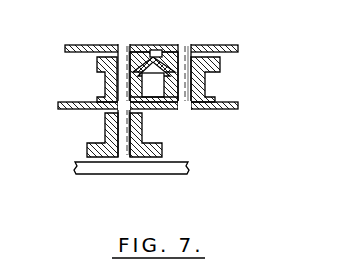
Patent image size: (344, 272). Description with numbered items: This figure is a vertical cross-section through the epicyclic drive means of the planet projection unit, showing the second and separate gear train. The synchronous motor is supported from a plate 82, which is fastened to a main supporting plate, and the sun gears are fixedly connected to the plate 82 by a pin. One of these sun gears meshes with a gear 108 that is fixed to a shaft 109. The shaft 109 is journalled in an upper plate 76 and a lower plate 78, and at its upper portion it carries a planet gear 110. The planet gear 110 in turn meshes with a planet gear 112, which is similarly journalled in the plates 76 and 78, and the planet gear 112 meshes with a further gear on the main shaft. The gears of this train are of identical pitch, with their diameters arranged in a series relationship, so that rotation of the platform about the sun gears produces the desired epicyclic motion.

The plate 76 is at (228, 47).
The plate 78 is at (228, 110).
The plate 82 is at (85, 174).
The gear 108 is at (87, 144).
The shaft 109 is at (129, 127).
The planet gear 110 is at (98, 62).
The planet gear 112 is at (220, 63).